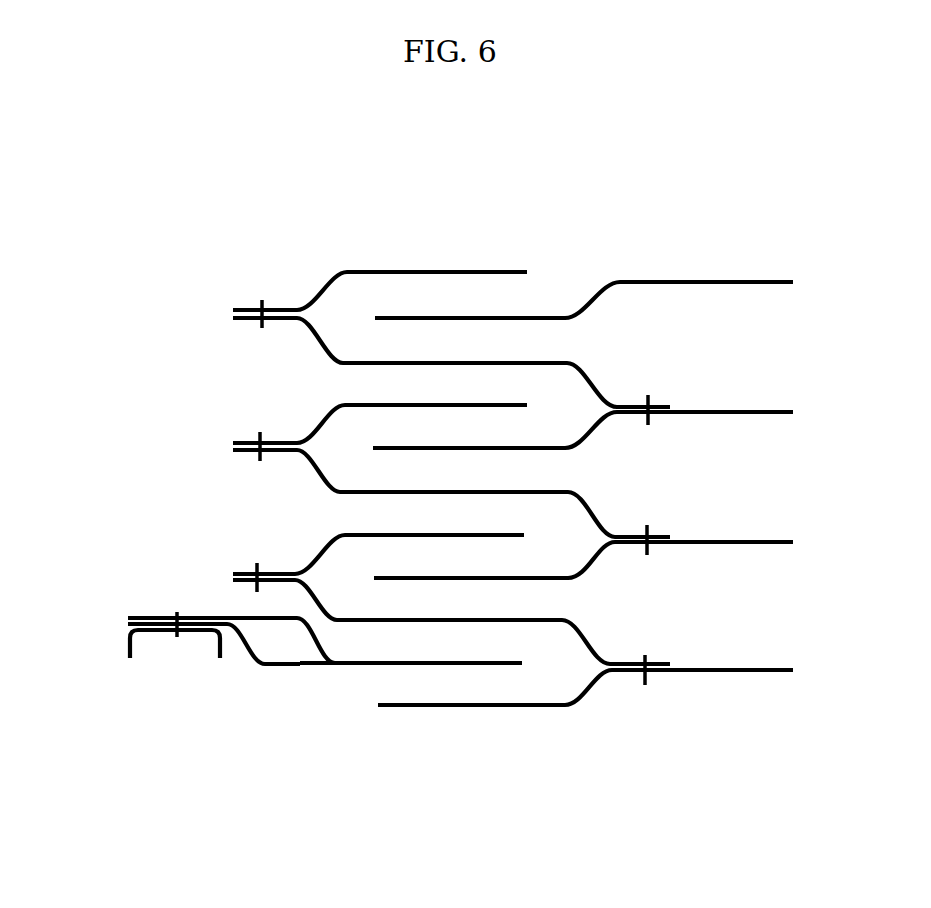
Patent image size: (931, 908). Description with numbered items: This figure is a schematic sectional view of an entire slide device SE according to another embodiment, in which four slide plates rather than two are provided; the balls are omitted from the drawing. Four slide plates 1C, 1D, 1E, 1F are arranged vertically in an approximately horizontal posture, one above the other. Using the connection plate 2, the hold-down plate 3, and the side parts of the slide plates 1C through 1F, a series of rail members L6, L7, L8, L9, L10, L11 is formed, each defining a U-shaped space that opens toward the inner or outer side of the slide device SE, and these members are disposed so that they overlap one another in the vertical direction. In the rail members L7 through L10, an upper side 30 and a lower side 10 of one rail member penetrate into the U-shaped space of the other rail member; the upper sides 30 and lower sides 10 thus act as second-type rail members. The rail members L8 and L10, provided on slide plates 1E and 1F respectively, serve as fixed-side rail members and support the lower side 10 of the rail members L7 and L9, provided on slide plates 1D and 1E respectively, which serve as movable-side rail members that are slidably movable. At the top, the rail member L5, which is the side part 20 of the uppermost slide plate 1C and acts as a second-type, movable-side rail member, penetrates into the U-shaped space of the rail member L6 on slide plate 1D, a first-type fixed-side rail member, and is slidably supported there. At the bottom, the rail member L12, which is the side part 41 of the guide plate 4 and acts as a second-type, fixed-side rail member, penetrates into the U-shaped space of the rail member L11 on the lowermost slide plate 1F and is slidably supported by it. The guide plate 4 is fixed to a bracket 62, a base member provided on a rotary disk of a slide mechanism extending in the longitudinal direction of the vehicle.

The slide device SE is at (154, 298).
The rail member L6 is at (322, 283).
The rail member L8 is at (328, 412).
The rail member L10 is at (327, 545).
The hold-down plate 3 is at (375, 272).
The upper side 30 is at (415, 405).
The connection plate 2 is at (523, 360).
The rail member L7 is at (583, 370).
The rail member L9 is at (583, 497).
The side part 20 is at (413, 317).
The rail member L5 is at (455, 317).
The lower side 10 is at (418, 447).
The slide plate 1C is at (722, 285).
The slide plate 1D is at (737, 416).
The slide plate 1E is at (733, 545).
The slide plate 1F is at (737, 673).
The rail member L11 is at (548, 707).
The bracket 62 is at (127, 645).
The guide plate 4 is at (287, 660).
The rail member L12 is at (368, 665).
The side part 41 is at (430, 663).